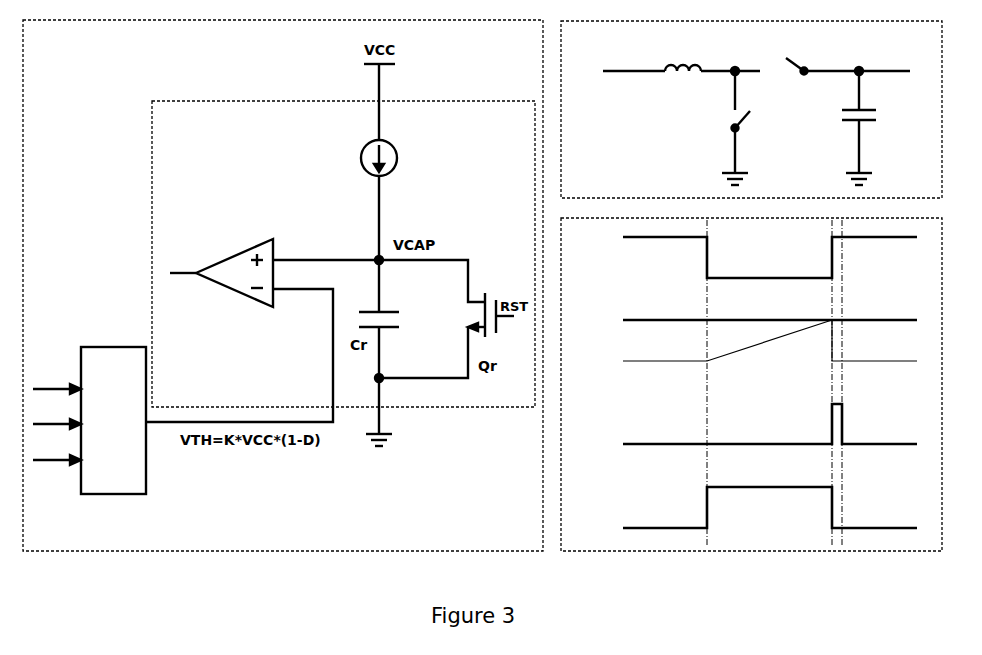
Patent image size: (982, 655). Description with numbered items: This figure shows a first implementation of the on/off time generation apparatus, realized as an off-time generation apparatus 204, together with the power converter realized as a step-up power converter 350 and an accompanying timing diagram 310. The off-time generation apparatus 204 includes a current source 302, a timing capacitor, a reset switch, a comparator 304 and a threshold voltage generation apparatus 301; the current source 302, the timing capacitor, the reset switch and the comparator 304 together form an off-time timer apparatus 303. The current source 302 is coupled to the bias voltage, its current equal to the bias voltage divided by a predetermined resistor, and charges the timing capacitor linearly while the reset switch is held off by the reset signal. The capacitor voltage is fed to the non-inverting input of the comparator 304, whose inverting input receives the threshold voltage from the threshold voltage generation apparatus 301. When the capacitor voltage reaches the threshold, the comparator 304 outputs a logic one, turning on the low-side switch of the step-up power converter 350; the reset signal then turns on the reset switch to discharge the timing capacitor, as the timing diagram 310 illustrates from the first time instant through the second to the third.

The off-time generation apparatus 204 is at (533, 535).
The off-time timer apparatus 303 is at (525, 140).
The current source 302 is at (361, 151).
The comparator 304 is at (231, 257).
The threshold voltage generation apparatus 301 is at (108, 494).
The step-up power converter 350 is at (935, 192).
The timing diagram 310 is at (930, 547).